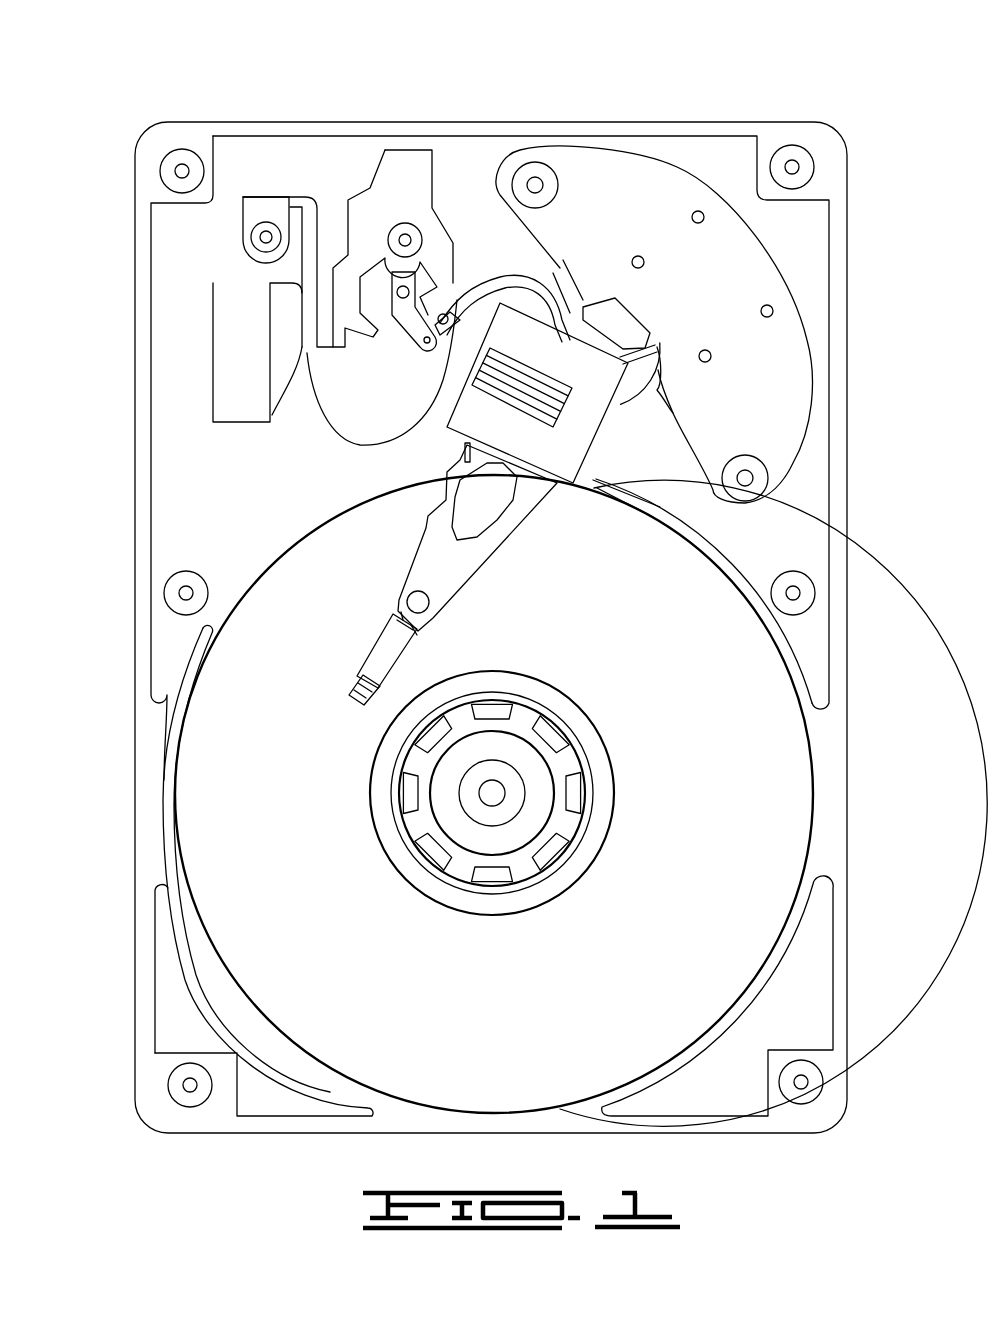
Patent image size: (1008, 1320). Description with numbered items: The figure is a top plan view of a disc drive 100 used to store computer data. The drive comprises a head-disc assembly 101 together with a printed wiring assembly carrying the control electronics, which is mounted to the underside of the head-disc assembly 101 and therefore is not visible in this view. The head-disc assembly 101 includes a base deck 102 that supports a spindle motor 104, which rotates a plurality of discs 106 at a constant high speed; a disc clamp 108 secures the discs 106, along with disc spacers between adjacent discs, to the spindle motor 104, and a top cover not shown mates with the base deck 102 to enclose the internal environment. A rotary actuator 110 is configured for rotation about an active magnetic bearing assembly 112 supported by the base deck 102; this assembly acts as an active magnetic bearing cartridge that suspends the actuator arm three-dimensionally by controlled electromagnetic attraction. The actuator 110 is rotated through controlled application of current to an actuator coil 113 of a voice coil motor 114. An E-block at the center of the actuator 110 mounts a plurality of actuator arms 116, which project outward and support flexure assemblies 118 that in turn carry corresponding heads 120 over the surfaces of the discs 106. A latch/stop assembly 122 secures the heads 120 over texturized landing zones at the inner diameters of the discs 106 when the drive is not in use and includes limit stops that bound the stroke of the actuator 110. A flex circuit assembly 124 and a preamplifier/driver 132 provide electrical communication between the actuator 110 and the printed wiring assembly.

The disc drive 100 is at (247, 97).
The head-disc assembly 101 is at (148, 155).
The base deck 102 is at (232, 492).
The spindle motor 104 is at (503, 833).
The discs 106 is at (740, 880).
The disc clamp 108 is at (388, 845).
The rotary actuator 110 is at (521, 545).
The active magnetic bearing assembly 112 is at (608, 447).
The actuator coil 113 is at (655, 347).
The voice coil motor 114 is at (590, 217).
The actuator arms 116 is at (430, 577).
The flexure assemblies 118 is at (378, 658).
The heads 120 is at (350, 693).
The latch/stop assembly 122 is at (403, 167).
The flex circuit assembly 124 is at (341, 459).
The preamplifier/driver 132 is at (463, 452).